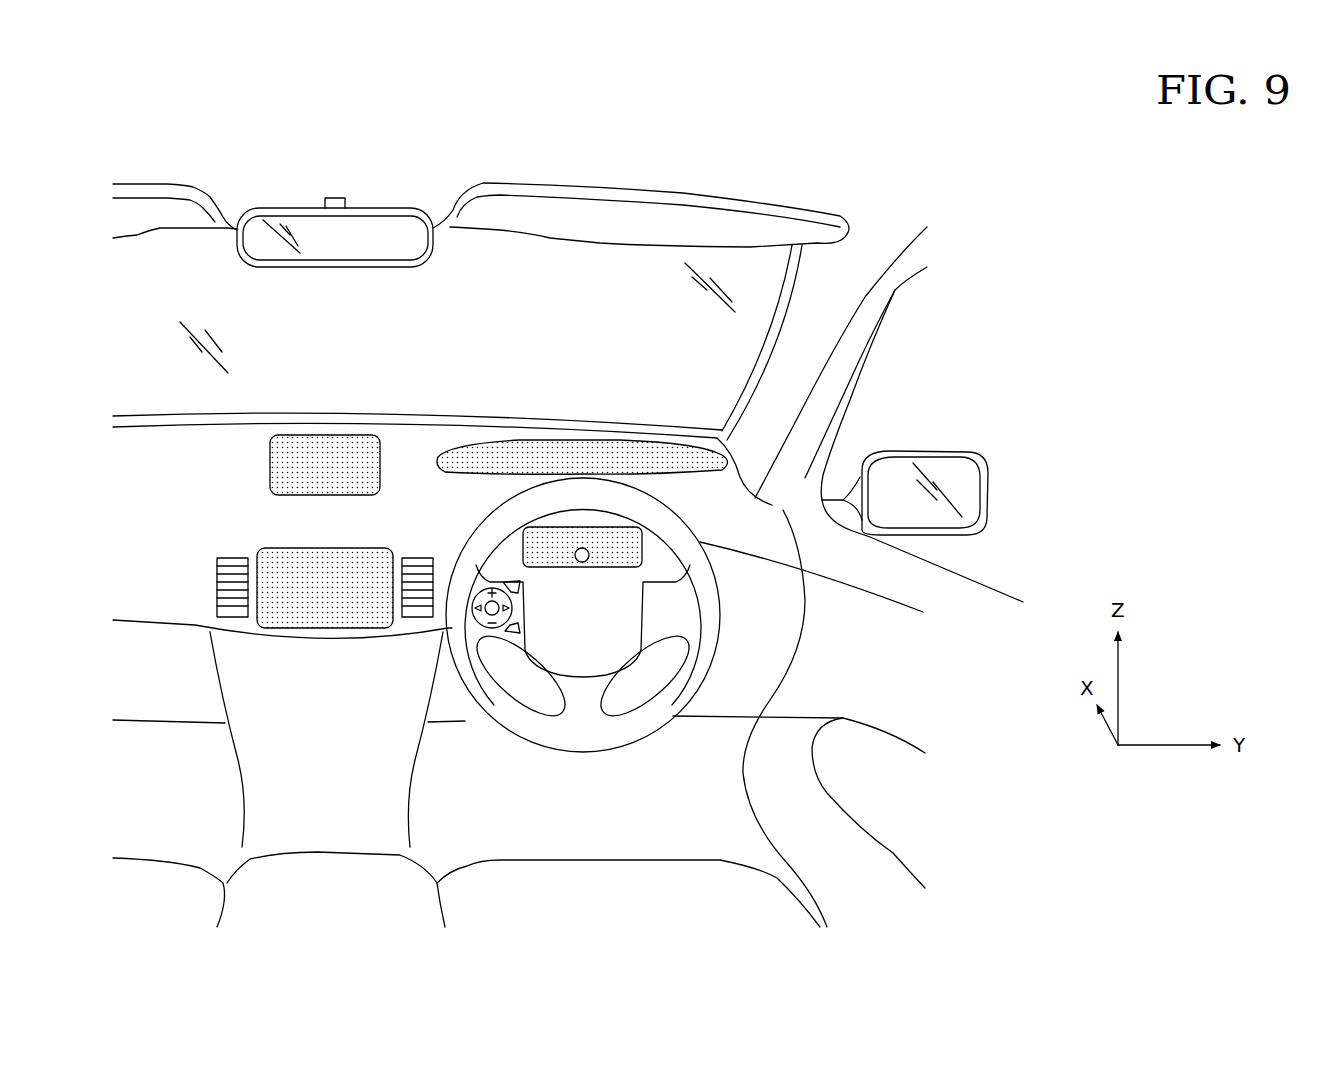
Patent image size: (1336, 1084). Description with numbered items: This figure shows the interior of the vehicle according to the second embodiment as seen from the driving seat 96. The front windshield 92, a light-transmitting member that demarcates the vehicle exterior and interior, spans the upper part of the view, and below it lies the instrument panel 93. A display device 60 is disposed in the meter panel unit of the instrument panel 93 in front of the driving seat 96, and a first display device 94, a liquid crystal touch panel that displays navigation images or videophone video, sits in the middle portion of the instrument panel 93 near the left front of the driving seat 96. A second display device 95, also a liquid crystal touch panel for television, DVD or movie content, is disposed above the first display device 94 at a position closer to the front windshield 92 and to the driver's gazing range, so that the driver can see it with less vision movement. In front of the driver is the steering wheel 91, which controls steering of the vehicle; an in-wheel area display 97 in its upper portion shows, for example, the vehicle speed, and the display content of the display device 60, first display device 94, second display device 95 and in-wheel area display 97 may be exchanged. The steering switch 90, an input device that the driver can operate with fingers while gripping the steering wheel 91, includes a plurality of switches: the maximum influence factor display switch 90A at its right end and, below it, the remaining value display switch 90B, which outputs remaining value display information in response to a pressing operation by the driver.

The display device 60 is at (584, 450).
The steering switch 90 is at (473, 592).
The maximum influence factor display switch 90A is at (510, 586).
The remaining value display switch 90B is at (513, 632).
The steering wheel 91 is at (583, 738).
The front windshield 92 is at (536, 268).
The instrument panel 93 is at (413, 447).
The first display device 94 is at (326, 628).
The second display device 95 is at (322, 445).
The driving seat 96 is at (637, 917).
The in-wheel area display 97 is at (582, 563).